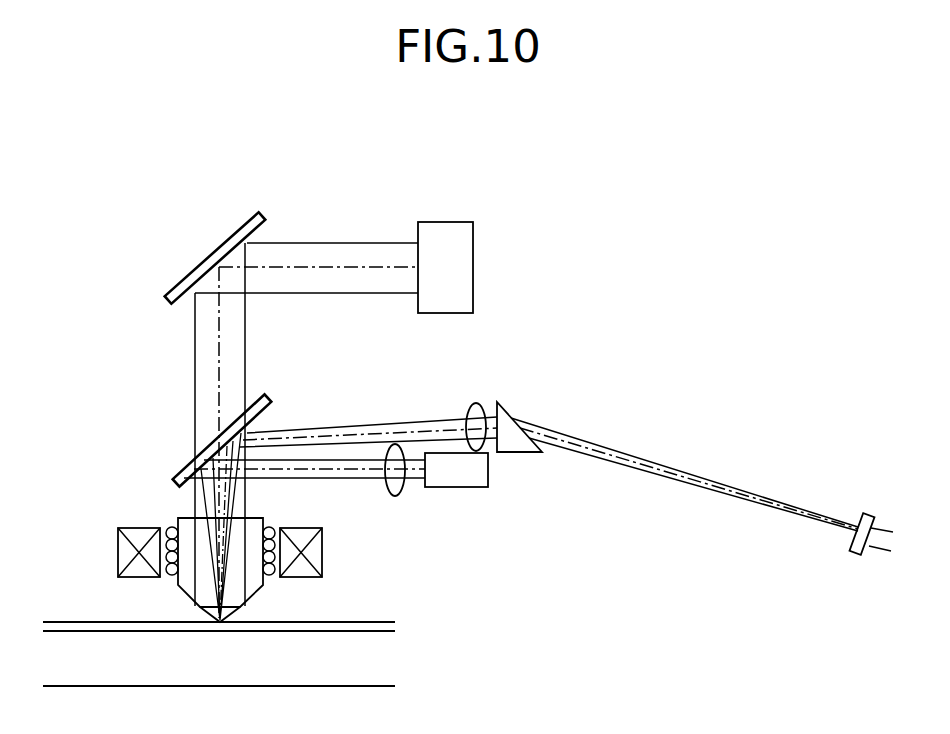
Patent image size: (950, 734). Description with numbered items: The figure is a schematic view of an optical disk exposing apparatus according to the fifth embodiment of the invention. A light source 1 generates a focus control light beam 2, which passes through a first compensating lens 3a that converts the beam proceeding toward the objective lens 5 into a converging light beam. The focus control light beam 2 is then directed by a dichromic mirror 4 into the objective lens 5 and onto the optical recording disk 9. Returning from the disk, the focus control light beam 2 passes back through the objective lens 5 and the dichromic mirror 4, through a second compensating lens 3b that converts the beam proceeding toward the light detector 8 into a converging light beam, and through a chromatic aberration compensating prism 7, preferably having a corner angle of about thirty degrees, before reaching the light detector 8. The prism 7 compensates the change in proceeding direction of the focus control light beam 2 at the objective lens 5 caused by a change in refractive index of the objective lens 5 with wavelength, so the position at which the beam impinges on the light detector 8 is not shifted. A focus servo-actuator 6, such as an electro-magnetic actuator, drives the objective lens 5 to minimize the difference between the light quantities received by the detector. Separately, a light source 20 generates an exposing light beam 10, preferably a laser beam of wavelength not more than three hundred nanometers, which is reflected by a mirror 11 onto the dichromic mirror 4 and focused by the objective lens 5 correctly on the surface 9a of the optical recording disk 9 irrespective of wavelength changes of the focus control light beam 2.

The light source 1 is at (463, 480).
The focus control light beam 2 is at (347, 480).
The first compensating lens 3a is at (396, 497).
The second compensating lens 3b is at (472, 405).
The dichromic mirror 4 is at (267, 392).
The objective lens 5 is at (252, 590).
The focus servo-actuator 6 is at (170, 530).
The chromatic aberration compensating prism 7 is at (503, 407).
The light detector 8 is at (870, 513).
The optical recording disk 9 is at (385, 662).
The surface of the optical recording disk 9a is at (383, 623).
The exposing light beam 10 is at (318, 247).
The mirror 11 is at (250, 216).
The light source 20 is at (445, 230).